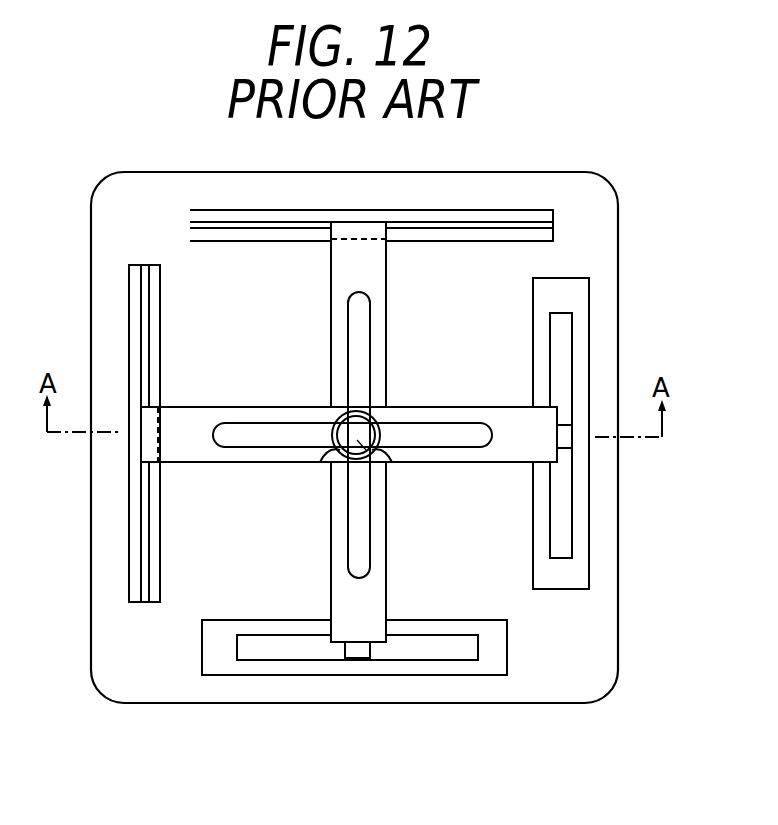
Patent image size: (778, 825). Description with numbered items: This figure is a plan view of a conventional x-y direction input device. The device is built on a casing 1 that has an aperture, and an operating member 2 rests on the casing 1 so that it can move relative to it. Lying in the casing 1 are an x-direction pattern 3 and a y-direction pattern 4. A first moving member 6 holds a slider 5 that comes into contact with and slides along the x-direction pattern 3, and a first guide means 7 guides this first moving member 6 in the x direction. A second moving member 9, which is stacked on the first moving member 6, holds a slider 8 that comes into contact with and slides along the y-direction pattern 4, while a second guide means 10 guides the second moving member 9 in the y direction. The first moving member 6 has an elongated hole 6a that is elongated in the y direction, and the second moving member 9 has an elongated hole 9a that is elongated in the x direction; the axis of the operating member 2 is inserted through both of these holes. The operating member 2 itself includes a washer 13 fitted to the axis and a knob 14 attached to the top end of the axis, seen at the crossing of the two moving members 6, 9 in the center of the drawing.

The casing 1 is at (607, 212).
The operating member 2 is at (388, 437).
The x-direction pattern 3 is at (458, 652).
The y-direction pattern 4 is at (558, 358).
The slider 5 is at (357, 652).
The first moving member 6 is at (373, 258).
The elongated hole 6a is at (363, 367).
The first guide means 7 is at (198, 211).
The slider 8 is at (565, 432).
The second moving member 9 is at (203, 415).
The elongated hole 9a is at (273, 430).
The second guide means 10 is at (127, 550).
The washer 13 is at (322, 461).
The knob 14 is at (393, 462).